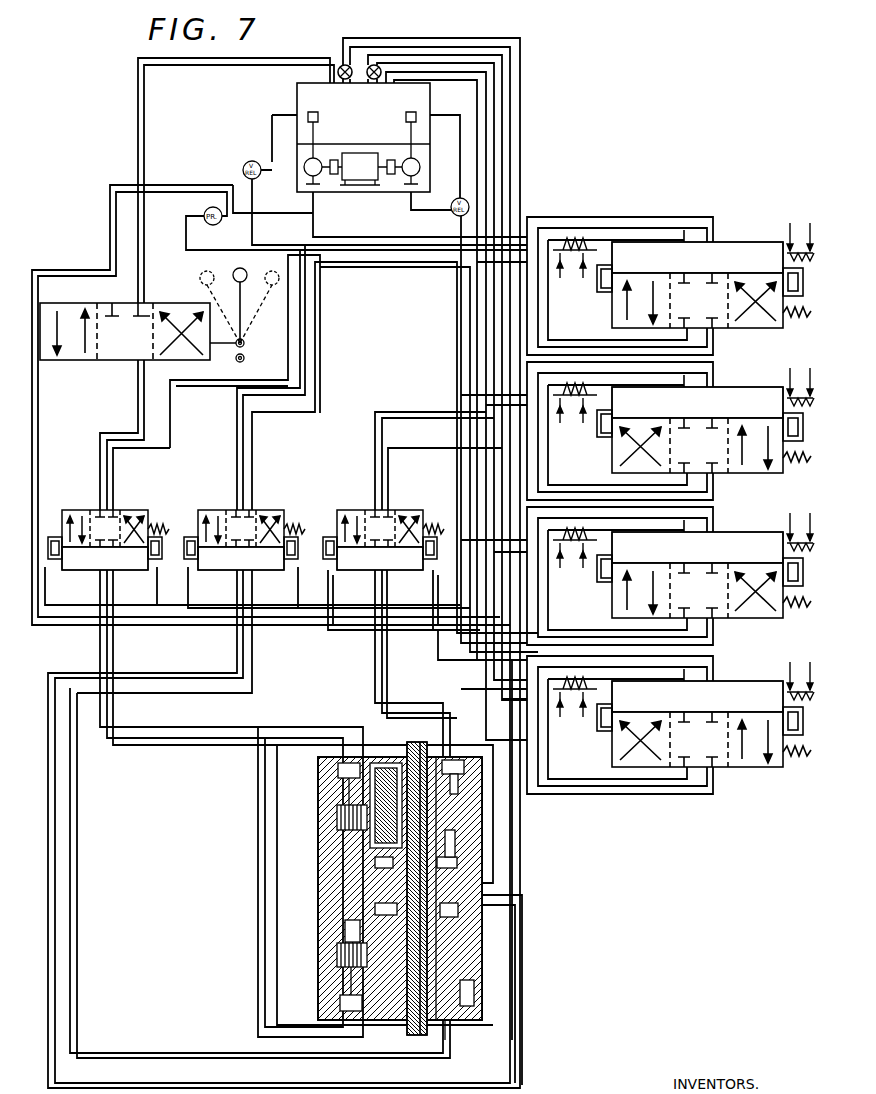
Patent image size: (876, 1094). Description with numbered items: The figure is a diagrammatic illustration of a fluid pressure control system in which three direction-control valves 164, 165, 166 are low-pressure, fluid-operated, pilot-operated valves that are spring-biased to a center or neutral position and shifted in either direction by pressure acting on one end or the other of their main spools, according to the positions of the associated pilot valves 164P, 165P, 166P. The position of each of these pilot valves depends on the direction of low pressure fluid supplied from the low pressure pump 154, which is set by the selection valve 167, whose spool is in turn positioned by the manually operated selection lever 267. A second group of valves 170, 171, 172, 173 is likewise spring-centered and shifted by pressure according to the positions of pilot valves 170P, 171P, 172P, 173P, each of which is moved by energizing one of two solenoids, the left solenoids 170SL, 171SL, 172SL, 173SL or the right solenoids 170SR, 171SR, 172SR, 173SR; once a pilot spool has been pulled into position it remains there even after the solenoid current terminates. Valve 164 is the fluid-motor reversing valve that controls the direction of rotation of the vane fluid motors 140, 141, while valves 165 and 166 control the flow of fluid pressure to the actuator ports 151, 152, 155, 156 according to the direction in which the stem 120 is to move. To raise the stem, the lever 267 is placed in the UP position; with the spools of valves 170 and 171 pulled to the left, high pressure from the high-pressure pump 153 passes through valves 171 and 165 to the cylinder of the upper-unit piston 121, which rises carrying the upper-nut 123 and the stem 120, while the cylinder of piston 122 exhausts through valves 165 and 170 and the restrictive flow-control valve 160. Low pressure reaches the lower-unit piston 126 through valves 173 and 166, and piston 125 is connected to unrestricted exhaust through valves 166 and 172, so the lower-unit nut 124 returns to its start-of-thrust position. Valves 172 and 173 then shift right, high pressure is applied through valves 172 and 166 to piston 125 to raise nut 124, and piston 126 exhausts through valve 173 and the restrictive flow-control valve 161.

The stem 120 is at (412, 1028).
The upper-unit piston 121 is at (375, 859).
The piston 122 is at (382, 768).
The upper-nut 123 is at (358, 824).
The lower-unit nut 124 is at (348, 932).
The lower-unit piston 125 is at (338, 955).
The lower-unit piston 126 is at (375, 910).
The vane fluid motor 140 is at (338, 770).
The vane fluid motor 141 is at (340, 998).
The port 151 is at (462, 862).
The port 152 is at (454, 760).
The high-pressure pump 153 is at (405, 158).
The low pressure pump 154 is at (318, 158).
The port 155 is at (457, 1020).
The port 156 is at (460, 901).
The restrictive flow-control valve 160 is at (336, 60).
The restrictive flow-control valve 161 is at (373, 61).
The fluid-motor reversing valve 164 is at (134, 512).
The pilot valve 164P is at (80, 560).
The direction-control valve 165 is at (272, 512).
The pilot valve 165P is at (220, 560).
The direction-control valve 166 is at (412, 512).
The pilot valve 166P is at (358, 562).
The selection valve 167 is at (78, 300).
The selection lever 267 is at (245, 317).
The valve 170 is at (750, 328).
The pilot valve 170P is at (697, 257).
The solenoid 170SL is at (571, 255).
The solenoid 170SR is at (799, 248).
The valve 171 is at (750, 473).
The pilot valve 171P is at (697, 402).
The solenoid 171SL is at (577, 400).
The solenoid 171SR is at (801, 397).
The valve 172 is at (750, 618).
The pilot valve 172P is at (697, 547).
The solenoid 172SL is at (571, 540).
The solenoid 172SR is at (801, 541).
The valve 173 is at (750, 767).
The pilot valve 173P is at (697, 696).
The solenoid 173SL is at (571, 698).
The solenoid 173SR is at (801, 688).